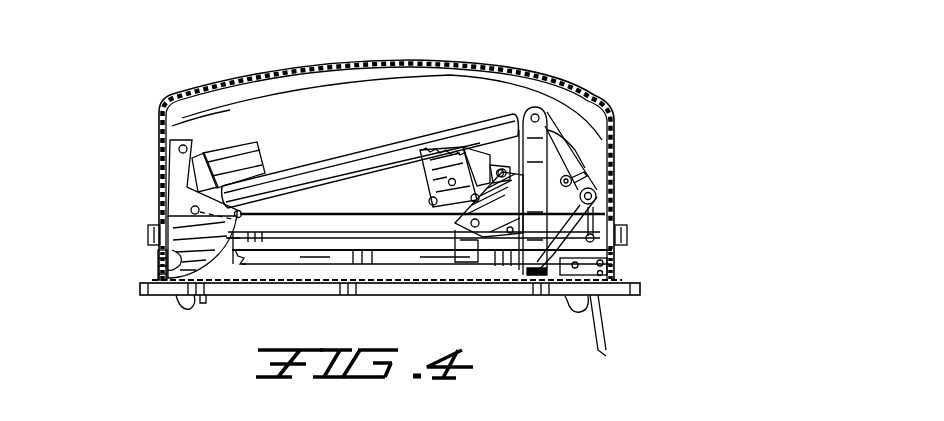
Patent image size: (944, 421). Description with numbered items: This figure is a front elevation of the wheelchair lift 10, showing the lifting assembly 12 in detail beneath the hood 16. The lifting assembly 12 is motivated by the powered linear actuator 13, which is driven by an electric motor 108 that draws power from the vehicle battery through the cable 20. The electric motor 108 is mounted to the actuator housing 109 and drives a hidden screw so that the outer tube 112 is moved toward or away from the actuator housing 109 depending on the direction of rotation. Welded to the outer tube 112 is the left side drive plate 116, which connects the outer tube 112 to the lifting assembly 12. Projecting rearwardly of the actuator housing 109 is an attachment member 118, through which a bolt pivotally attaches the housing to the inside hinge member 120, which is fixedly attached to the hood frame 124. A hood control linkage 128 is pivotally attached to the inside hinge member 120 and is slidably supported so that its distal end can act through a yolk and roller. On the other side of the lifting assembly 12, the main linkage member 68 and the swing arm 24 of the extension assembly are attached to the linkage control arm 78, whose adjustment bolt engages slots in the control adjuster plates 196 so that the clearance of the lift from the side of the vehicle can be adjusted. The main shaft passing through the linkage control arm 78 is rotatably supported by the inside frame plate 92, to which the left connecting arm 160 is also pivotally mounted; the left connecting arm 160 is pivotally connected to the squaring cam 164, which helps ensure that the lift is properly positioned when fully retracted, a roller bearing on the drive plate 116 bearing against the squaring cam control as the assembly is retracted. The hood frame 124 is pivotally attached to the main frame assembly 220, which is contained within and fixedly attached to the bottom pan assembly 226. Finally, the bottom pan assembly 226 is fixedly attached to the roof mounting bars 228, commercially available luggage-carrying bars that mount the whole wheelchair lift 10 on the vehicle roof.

The wheelchair lift 10 is at (693, 58).
The lifting assembly 12 is at (540, 108).
The powered linear actuator 13 is at (447, 160).
The hood 16 is at (352, 60).
The cable 20 is at (601, 315).
The swing arm 24 is at (393, 264).
The main linkage member 68 is at (478, 245).
The linkage control arm 78 is at (596, 214).
The inside frame plate 92 is at (541, 126).
The electric motor 108 is at (244, 140).
The actuator housing 109 is at (202, 140).
The outer tube 112 is at (429, 126).
The left side drive plate 116 is at (466, 132).
The attachment member 118 is at (186, 208).
The inside hinge member 120 is at (186, 202).
The hood frame 124 is at (147, 240).
The hood control linkage 128 is at (288, 214).
The left connecting arm 160 is at (492, 237).
The squaring cam 164 is at (550, 140).
The control adjuster plates 196 is at (572, 164).
The main frame assembly 220 is at (148, 269).
The bottom pan assembly 226 is at (240, 220).
The roof mounting bars 228 is at (188, 306).